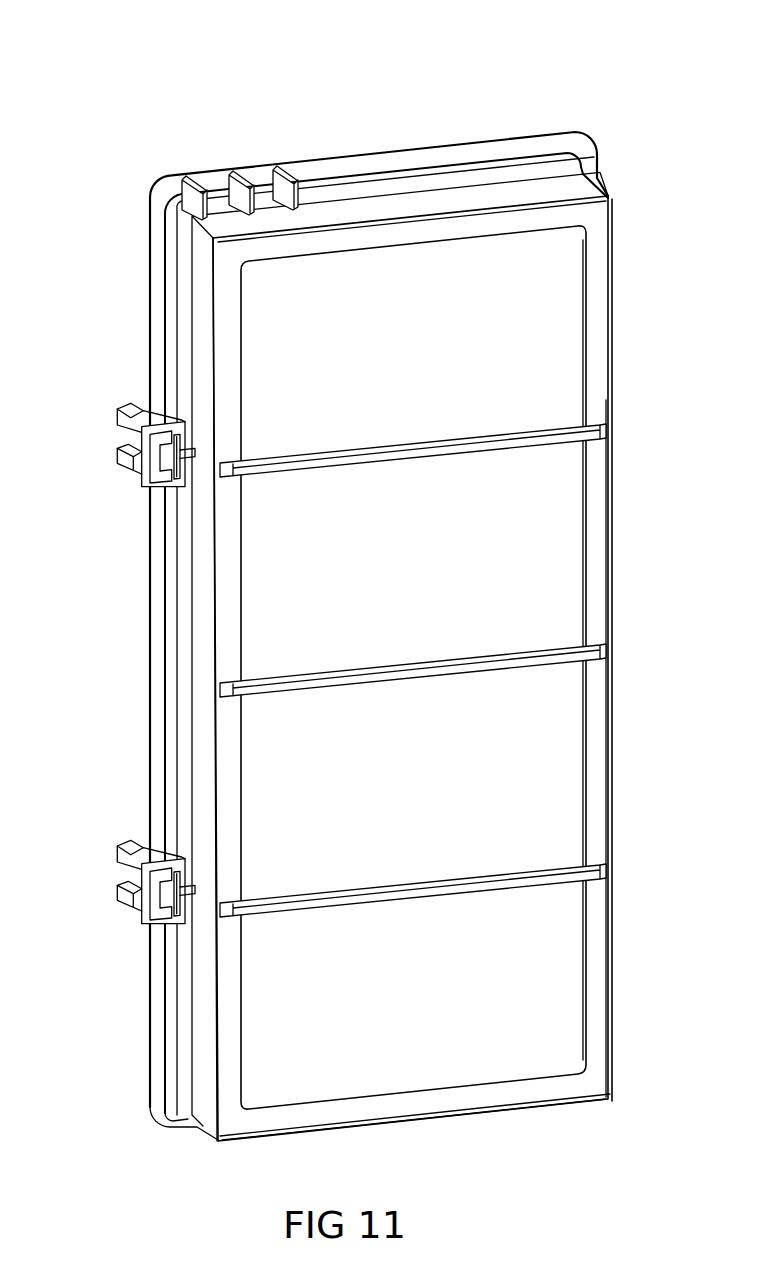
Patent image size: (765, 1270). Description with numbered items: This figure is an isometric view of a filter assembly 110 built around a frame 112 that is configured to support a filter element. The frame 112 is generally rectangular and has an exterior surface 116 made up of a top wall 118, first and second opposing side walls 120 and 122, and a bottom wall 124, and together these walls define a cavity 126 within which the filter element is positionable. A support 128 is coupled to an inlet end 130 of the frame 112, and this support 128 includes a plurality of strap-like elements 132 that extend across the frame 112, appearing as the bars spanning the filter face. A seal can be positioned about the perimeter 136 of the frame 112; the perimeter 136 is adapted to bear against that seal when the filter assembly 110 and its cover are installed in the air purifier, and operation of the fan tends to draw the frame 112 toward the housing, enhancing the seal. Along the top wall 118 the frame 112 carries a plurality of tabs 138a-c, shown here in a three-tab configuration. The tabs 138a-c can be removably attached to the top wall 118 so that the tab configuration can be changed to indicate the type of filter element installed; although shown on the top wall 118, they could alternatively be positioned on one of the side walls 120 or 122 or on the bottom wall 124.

The filter assembly 110 is at (371, 600).
The frame 112 is at (594, 348).
The exterior surface 116 is at (612, 742).
The top wall 118 is at (450, 198).
The first side wall 120 is at (611, 600).
The second side wall 122 is at (200, 1033).
The bottom wall 124 is at (506, 1113).
The cavity 126 is at (571, 1010).
The support 128 is at (600, 840).
The inlet end 130 is at (568, 402).
The strap-like elements 132 is at (225, 690).
The perimeter 136 is at (153, 340).
The tabs 138a-c is at (230, 172).